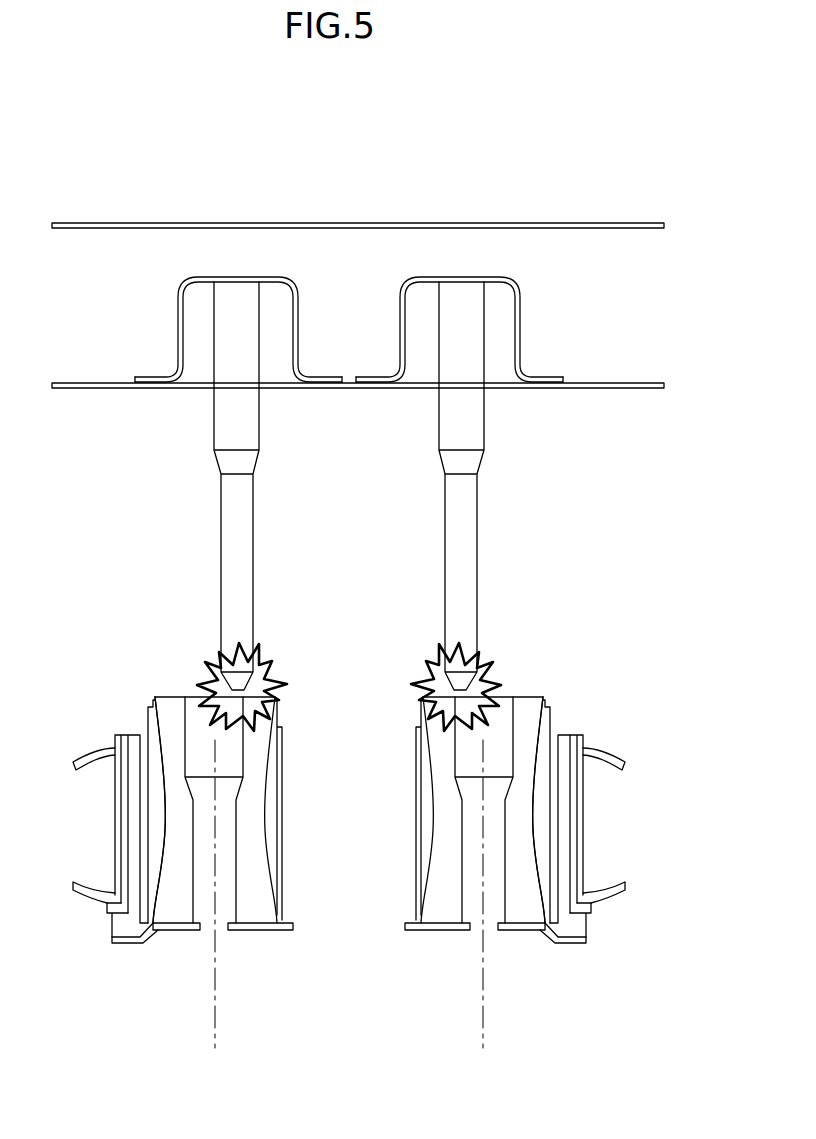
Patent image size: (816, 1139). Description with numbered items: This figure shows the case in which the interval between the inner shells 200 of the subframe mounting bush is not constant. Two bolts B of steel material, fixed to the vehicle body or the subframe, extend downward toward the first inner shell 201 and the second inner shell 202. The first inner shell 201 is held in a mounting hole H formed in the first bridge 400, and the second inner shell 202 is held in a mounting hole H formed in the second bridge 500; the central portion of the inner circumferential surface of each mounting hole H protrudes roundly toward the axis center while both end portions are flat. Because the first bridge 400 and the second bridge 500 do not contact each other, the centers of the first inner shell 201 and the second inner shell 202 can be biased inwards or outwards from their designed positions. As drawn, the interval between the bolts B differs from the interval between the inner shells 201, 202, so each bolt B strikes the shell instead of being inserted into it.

The inner shell 200 is at (349, 897).
The first inner shell 201 is at (263, 918).
The second inner shell 202 is at (435, 918).
The first bridge 400 is at (147, 735).
The second bridge 500 is at (551, 735).
The bolt B is at (463, 535).
The mounting hole H is at (181, 867).